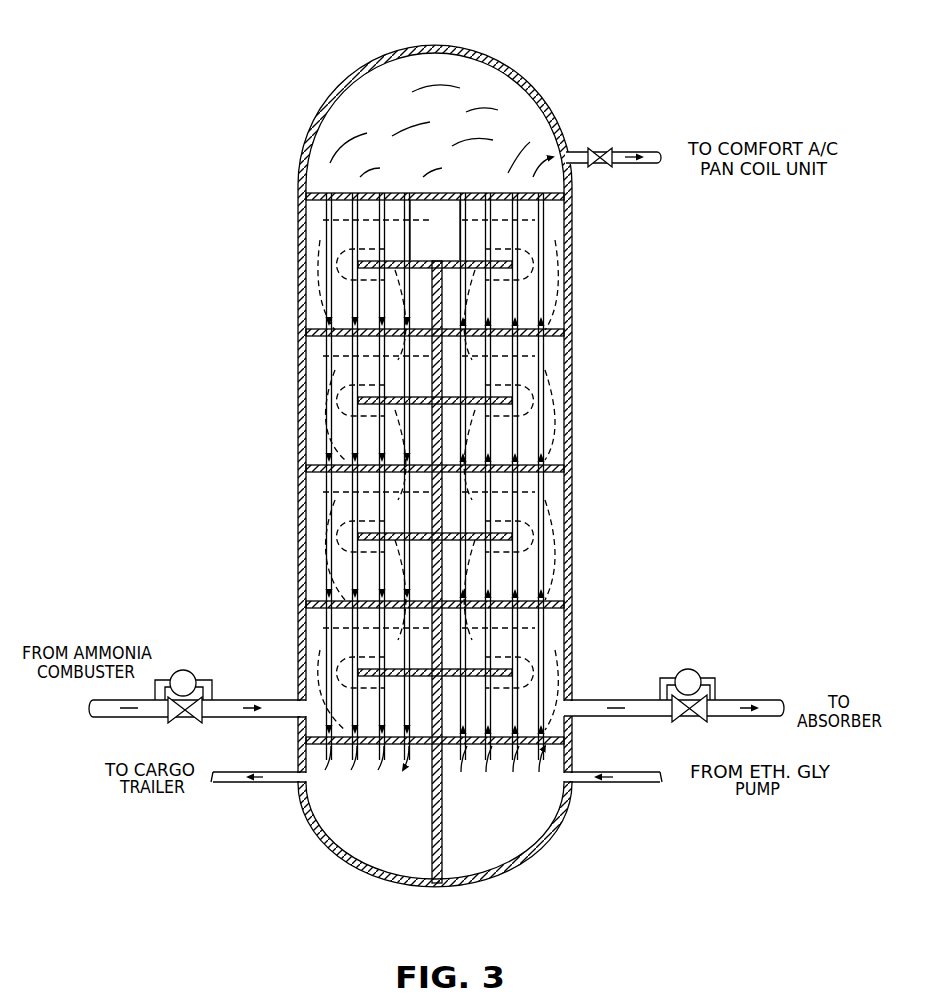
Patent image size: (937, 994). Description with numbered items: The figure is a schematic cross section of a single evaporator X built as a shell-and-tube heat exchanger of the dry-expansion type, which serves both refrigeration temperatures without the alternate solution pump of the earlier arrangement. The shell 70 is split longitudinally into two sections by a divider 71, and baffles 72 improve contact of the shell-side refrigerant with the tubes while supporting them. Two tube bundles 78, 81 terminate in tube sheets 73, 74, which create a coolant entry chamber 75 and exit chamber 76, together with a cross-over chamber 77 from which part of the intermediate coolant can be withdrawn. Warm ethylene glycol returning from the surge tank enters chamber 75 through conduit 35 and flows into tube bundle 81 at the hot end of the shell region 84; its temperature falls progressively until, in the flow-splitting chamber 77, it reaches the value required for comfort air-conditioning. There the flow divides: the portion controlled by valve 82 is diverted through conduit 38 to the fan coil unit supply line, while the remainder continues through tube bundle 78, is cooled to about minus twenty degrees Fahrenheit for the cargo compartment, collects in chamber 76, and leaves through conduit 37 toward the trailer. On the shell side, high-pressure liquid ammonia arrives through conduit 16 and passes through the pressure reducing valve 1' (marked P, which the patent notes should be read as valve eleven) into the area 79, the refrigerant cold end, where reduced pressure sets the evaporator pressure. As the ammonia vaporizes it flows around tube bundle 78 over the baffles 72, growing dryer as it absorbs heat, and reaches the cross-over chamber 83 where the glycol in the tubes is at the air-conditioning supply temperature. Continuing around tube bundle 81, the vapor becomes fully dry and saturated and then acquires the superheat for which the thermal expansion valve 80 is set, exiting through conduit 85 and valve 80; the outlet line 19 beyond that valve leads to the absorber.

The shell 70 is at (298, 380).
The evaporator X is at (572, 367).
The divider 71 is at (433, 517).
The tube sheet 73 is at (438, 197).
The baffles 72 is at (375, 462).
The tube bundle 81 is at (540, 441).
The tube bundle 78 is at (403, 573).
The tube sheet 74 is at (392, 750).
The cross-over chamber 77 is at (448, 103).
The cross-over chamber 83 is at (447, 213).
The conduit 38 is at (645, 150).
The valve 82 is at (600, 168).
The conduit 16 is at (107, 718).
The pressure reducing valve 1' is at (183, 668).
The area 79 is at (302, 724).
The outlet line to absorber 19 is at (750, 700).
The conduit 85 is at (637, 700).
The thermal expansion valve 80 is at (686, 668).
The shell region 84 is at (573, 622).
The conduit 37 is at (262, 783).
The conduit 35 is at (633, 783).
The chamber 76 is at (350, 806).
The chamber 75 is at (512, 830).